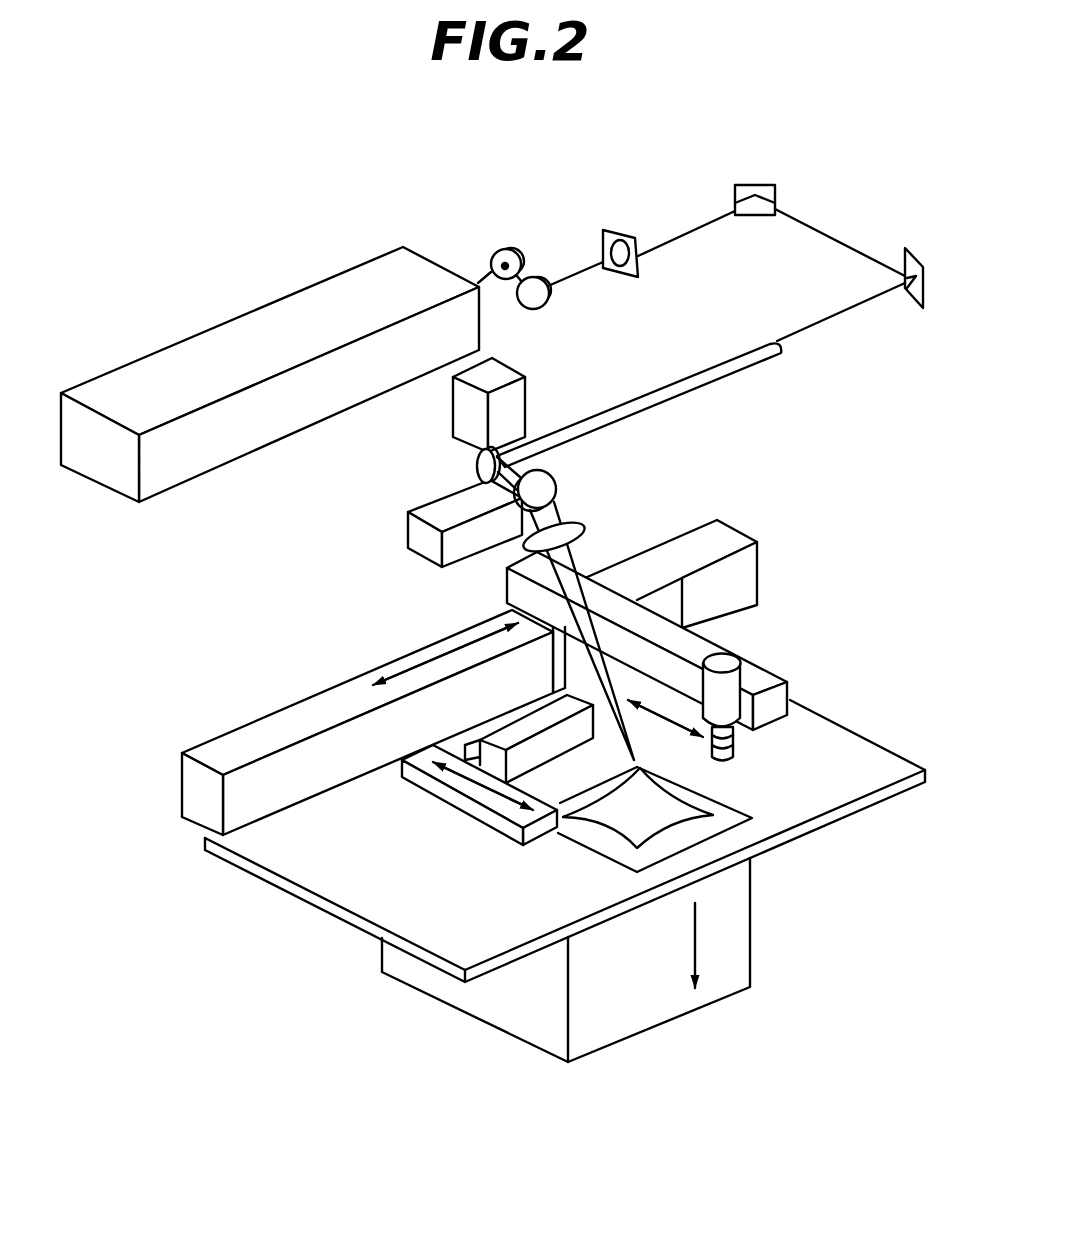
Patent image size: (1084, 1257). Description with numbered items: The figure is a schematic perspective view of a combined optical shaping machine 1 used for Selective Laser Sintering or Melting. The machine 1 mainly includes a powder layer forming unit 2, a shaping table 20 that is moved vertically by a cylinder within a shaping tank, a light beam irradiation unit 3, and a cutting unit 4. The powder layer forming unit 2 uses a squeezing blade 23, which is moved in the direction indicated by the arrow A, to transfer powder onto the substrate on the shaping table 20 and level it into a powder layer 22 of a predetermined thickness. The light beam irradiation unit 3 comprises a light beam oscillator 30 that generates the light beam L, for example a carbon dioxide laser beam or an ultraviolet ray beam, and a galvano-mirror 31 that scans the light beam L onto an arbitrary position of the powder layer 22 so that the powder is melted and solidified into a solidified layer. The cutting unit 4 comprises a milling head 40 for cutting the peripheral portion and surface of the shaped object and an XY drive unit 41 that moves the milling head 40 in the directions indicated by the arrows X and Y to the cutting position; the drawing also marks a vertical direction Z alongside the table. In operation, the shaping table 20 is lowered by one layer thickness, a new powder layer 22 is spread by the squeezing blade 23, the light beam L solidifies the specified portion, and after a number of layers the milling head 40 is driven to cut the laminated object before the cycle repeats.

The combined optical shaping machine 1 is at (499, 646).
The powder layer forming unit 2 is at (555, 842).
The shaping table 20 is at (732, 826).
The powder layer 22 is at (655, 850).
The squeezing blade 23 is at (493, 753).
The light beam irradiation unit 3 is at (653, 465).
The light beam oscillator 30 is at (220, 332).
The galvano-mirror 31 is at (470, 467).
The cutting unit 4 is at (722, 640).
The milling head 40 is at (723, 747).
The XY drive unit 41 is at (697, 647).
The light beam L is at (837, 230).
The arrow X is at (447, 652).
The arrow Y is at (667, 720).
The Z direction Z is at (697, 947).
The arrow A is at (480, 762).